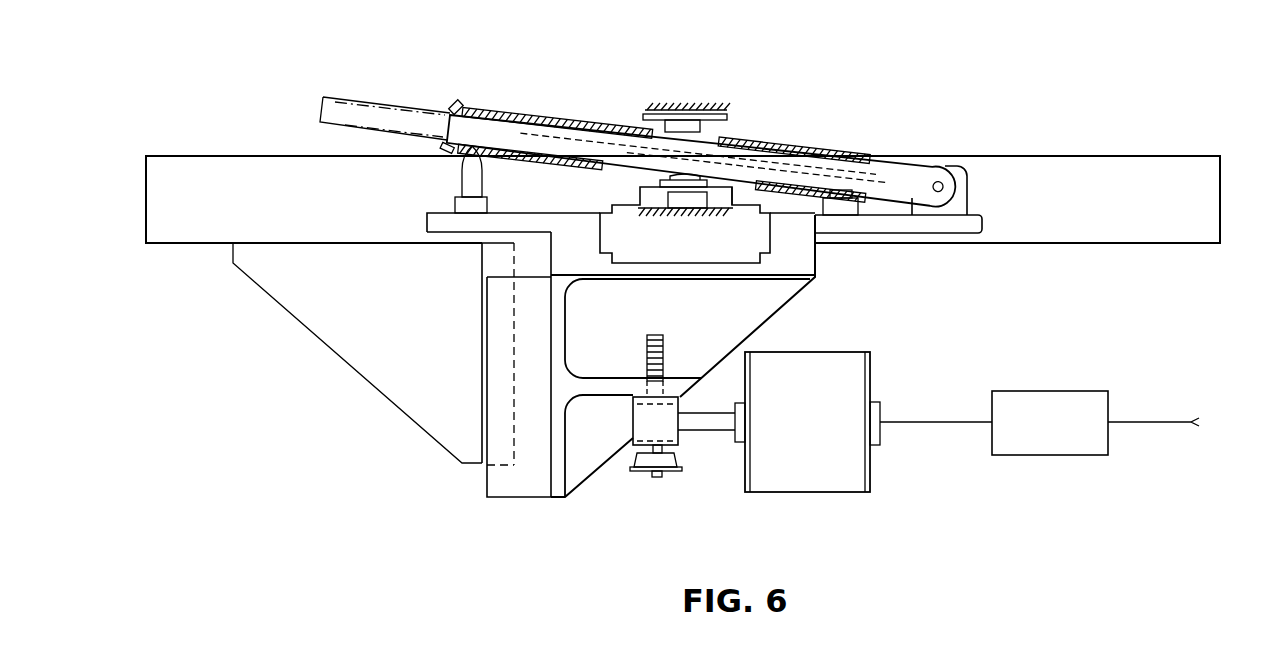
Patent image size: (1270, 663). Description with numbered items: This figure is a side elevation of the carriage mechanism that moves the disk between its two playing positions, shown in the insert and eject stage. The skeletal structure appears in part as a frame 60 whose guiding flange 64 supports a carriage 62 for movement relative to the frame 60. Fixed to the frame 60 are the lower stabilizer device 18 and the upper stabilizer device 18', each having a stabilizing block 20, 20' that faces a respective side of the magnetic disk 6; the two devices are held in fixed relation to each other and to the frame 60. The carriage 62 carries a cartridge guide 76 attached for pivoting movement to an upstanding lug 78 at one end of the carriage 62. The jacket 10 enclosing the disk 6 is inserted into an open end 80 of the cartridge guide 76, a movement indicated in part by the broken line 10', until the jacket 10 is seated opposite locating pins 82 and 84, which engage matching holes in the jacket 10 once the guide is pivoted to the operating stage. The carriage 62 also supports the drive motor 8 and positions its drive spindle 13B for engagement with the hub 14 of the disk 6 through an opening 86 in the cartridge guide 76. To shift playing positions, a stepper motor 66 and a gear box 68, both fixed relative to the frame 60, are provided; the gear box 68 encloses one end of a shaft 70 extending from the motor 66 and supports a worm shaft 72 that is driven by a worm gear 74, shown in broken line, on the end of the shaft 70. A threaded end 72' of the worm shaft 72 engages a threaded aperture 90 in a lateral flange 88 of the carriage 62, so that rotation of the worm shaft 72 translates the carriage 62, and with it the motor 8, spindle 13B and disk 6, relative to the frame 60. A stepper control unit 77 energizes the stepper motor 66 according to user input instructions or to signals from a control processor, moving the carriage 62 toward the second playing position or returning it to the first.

The frame 60 is at (282, 168).
The guiding flange 64 is at (495, 276).
The carriage 62 is at (800, 262).
The locating pin 84 is at (823, 203).
The lateral flange 88 is at (607, 383).
The locating pin 82 is at (462, 190).
The drive motor 8 is at (653, 237).
The stabilizing block 20 is at (685, 225).
The drive spindle 13B is at (670, 176).
The lower stabilizer device 18 is at (747, 222).
The upper stabilizer device 18' is at (713, 83).
The stabilizing block 20' is at (667, 110).
The jacket insertion movement 10' is at (377, 85).
The jacket 10 is at (687, 128).
The open end 80 is at (457, 102).
The cartridge guide 76 is at (560, 120).
The hub 14 is at (741, 157).
The opening 86 is at (605, 163).
The magnetic disk 6 is at (800, 167).
The upstanding lug 78 is at (967, 205).
The threaded end 72' is at (683, 346).
The worm gear 74 is at (640, 427).
The threaded aperture 90 is at (677, 383).
The worm shaft 72 is at (638, 472).
The gear box 68 is at (680, 435).
The shaft 70 is at (710, 420).
The stepper motor 66 is at (852, 360).
The stepper control unit 77 is at (1055, 390).